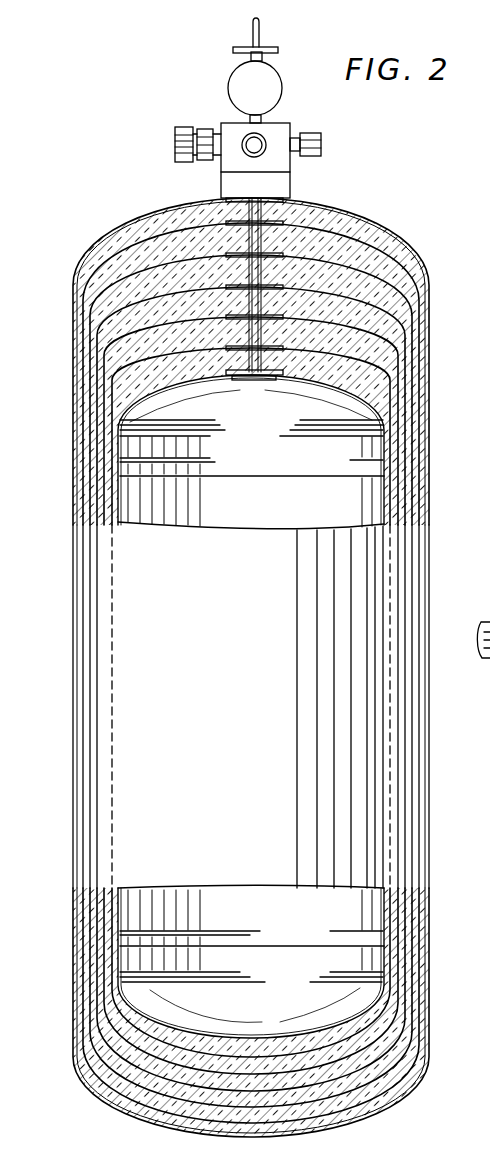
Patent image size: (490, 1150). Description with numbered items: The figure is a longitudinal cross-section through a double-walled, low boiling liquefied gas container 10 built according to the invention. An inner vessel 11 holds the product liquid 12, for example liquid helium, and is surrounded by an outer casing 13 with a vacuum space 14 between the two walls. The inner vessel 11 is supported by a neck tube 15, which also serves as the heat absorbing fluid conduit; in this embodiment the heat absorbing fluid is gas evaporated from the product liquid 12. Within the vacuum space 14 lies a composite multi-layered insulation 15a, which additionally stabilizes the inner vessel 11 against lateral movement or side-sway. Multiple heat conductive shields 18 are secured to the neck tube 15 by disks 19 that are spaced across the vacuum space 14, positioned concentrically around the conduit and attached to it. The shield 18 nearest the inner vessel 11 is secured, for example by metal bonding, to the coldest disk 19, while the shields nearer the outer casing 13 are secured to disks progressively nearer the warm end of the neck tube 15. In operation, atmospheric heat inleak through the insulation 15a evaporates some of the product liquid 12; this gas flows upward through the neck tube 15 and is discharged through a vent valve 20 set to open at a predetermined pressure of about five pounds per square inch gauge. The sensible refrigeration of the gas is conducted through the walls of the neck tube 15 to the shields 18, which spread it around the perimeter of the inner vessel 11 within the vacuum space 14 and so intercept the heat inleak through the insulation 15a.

The liquefied gas container 10 is at (438, 420).
The inner vessel 11 is at (400, 497).
The product liquid 12 is at (110, 513).
The outer casing 13 is at (432, 368).
The vacuum space 14 is at (420, 906).
The neck tube 15 is at (250, 381).
The composite multi-layered insulation 15a is at (100, 354).
The heat conductive shields 18 is at (152, 298).
The disks 19 is at (294, 204).
The vent valve 20 is at (238, 119).